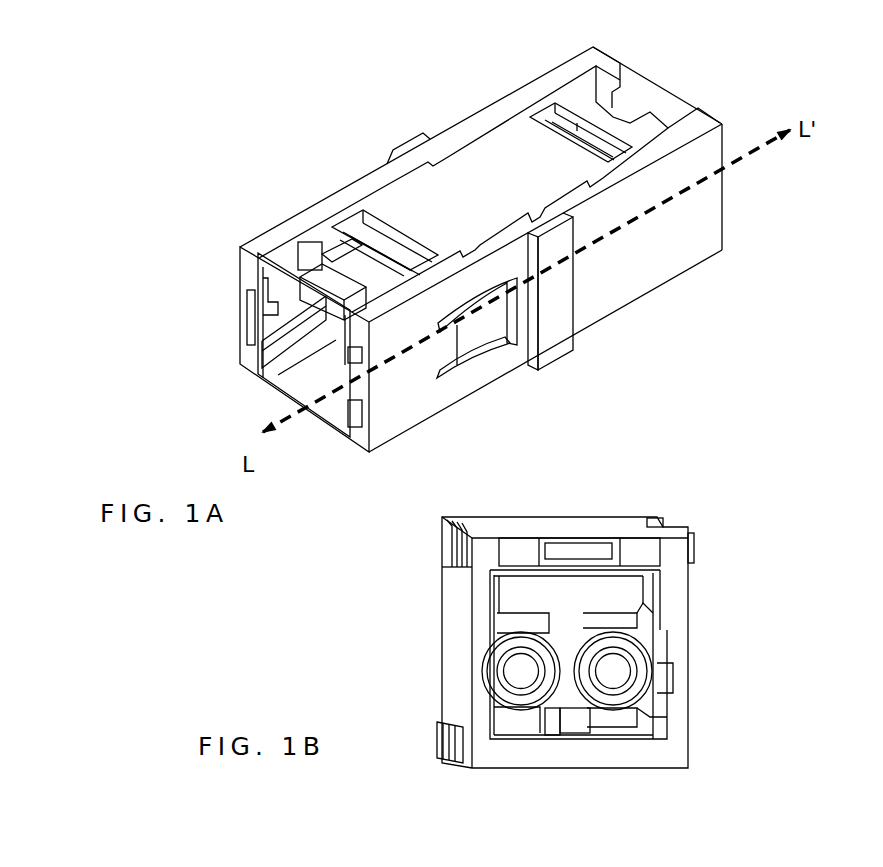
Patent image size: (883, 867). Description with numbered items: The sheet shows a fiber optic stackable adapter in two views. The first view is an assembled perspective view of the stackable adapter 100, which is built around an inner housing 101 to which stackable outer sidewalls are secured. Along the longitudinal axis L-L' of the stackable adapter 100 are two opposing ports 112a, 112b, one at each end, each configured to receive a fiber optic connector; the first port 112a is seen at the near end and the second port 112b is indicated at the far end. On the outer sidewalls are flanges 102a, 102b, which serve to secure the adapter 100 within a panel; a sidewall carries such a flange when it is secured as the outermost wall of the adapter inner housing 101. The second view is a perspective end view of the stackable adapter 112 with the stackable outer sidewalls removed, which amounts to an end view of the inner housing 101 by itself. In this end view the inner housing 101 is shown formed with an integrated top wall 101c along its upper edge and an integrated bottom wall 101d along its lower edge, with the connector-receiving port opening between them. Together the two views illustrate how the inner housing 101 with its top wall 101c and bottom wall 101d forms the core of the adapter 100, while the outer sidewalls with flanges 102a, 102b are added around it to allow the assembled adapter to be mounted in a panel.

In FIG. 1A, the stackable adapter 100 is at (238, 85).
In FIG. 1A, the inner housing 101 is at (442, 249).
In FIG. 1B, the inner housing 101 is at (685, 613).
In FIG. 1B, the top wall 101c is at (531, 506).
In FIG. 1B, the bottom wall 101d is at (662, 760).
In FIG. 1A, the flange 102a is at (398, 144).
In FIG. 1A, the flange 102b is at (570, 310).
In FIG. 1B, the stackable adapter 112 is at (719, 495).
In FIG. 1A, the port 112a is at (300, 378).
In FIG. 1A, the port 112b is at (660, 91).